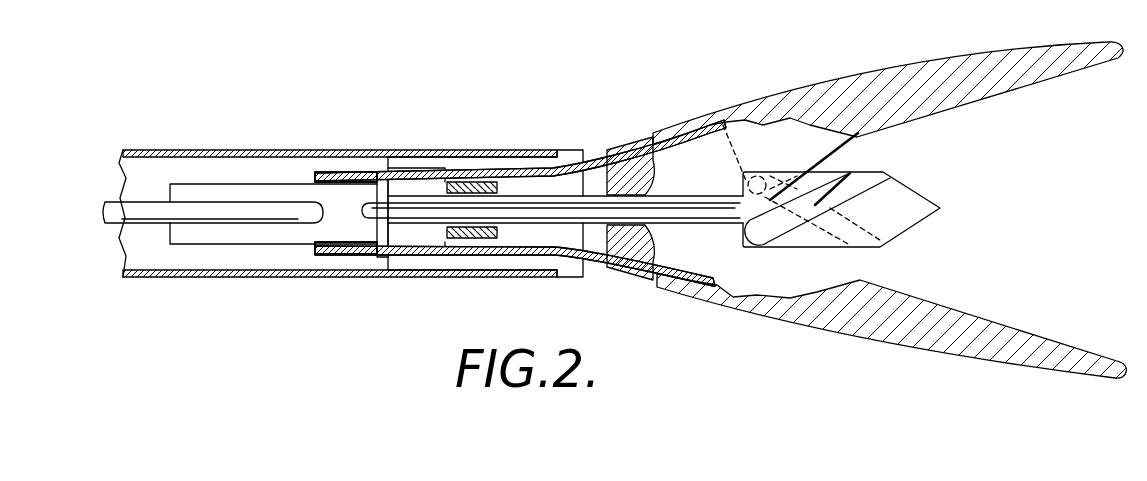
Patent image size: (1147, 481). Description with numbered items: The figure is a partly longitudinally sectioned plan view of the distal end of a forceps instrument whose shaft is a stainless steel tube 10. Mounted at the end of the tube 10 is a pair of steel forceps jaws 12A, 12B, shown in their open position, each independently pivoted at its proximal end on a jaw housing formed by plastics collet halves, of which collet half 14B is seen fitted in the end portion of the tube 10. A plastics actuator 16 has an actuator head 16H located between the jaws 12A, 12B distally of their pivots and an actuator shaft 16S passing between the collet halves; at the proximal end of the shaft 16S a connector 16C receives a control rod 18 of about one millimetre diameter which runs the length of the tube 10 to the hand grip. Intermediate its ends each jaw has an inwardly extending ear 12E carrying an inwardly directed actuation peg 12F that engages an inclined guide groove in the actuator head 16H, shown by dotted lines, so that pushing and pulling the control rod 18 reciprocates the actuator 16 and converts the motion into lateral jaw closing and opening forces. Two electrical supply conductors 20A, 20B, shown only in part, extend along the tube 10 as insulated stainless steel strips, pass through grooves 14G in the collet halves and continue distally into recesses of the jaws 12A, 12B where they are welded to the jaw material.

The tube 10 is at (333, 149).
The forceps jaw 12A is at (915, 70).
The forceps jaw 12B is at (855, 340).
The ear 12E is at (795, 151).
The actuation peg 12F is at (716, 121).
The collet half 14B is at (477, 162).
The grooves 14G is at (572, 190).
The actuator 16 is at (928, 187).
The connector 16C is at (252, 182).
The actuator head 16H is at (920, 224).
The actuator shaft 16S is at (537, 247).
The control rod 18 is at (143, 212).
The electrical supply conductor 20A is at (417, 170).
The electrical supply conductor 20B is at (432, 253).